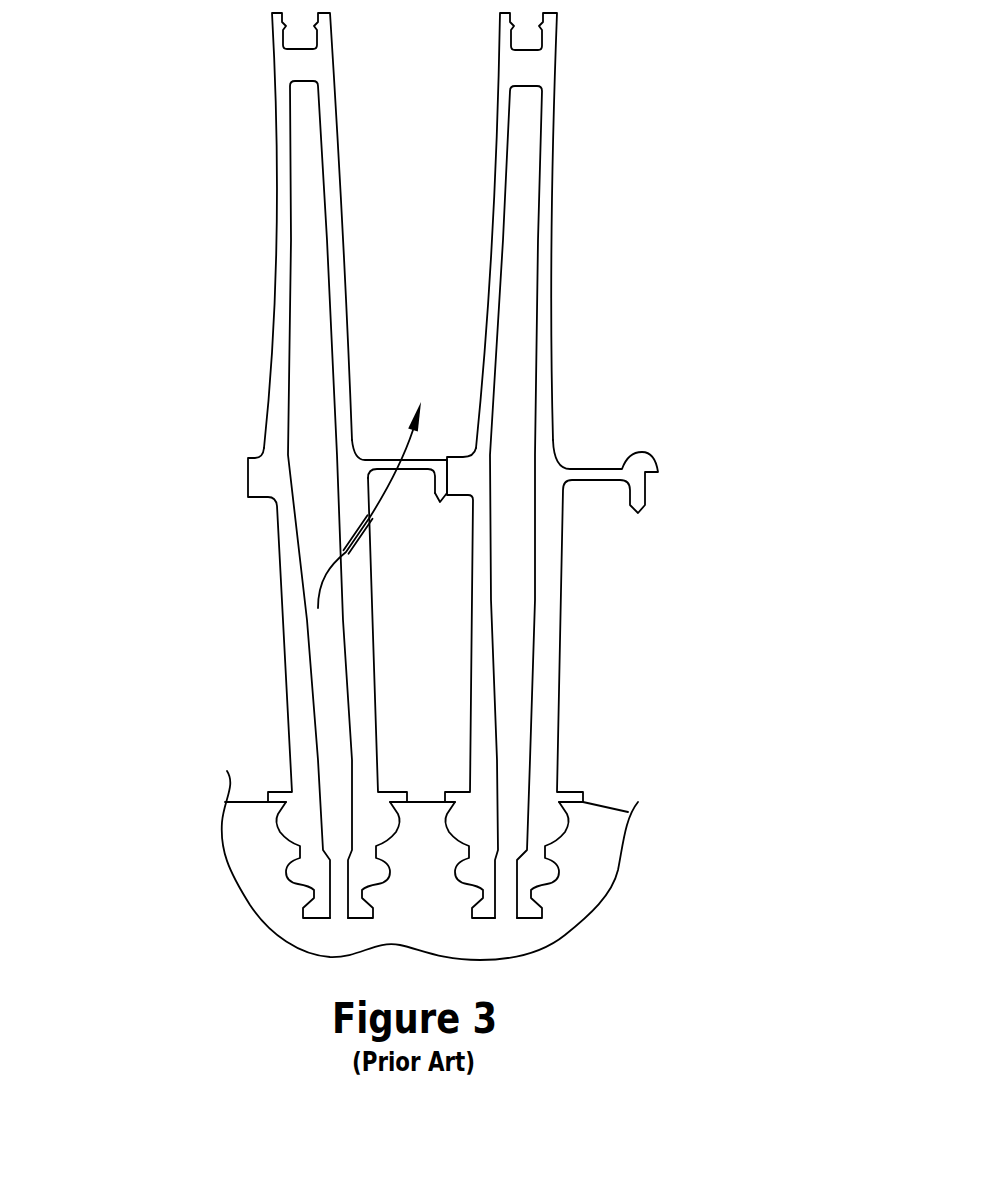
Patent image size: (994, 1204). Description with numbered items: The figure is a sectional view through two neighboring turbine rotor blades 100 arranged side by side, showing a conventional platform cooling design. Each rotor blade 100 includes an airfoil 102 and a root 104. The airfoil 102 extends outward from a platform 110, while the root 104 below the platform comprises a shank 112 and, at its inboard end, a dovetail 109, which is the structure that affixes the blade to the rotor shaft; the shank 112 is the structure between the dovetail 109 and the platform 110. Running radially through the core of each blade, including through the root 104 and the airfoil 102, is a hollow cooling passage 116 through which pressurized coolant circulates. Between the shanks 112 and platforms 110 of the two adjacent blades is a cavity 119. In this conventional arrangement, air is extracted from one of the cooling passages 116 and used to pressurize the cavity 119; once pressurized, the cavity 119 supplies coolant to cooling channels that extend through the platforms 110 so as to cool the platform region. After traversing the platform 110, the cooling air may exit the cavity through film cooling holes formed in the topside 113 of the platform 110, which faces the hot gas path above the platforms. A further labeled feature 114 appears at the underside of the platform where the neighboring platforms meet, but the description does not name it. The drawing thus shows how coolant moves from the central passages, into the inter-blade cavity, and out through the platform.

The turbine rotor blade 100 is at (371, 208).
The airfoil 102 is at (277, 287).
The root 104 is at (675, 720).
The dovetail 109 is at (545, 876).
The platform 110 is at (402, 458).
The shank 112 is at (224, 680).
The topside of the platform 113 is at (430, 458).
The platform undercut pocket 114 is at (417, 472).
The cooling passage 116 is at (310, 520).
The cavity 119 is at (440, 632).